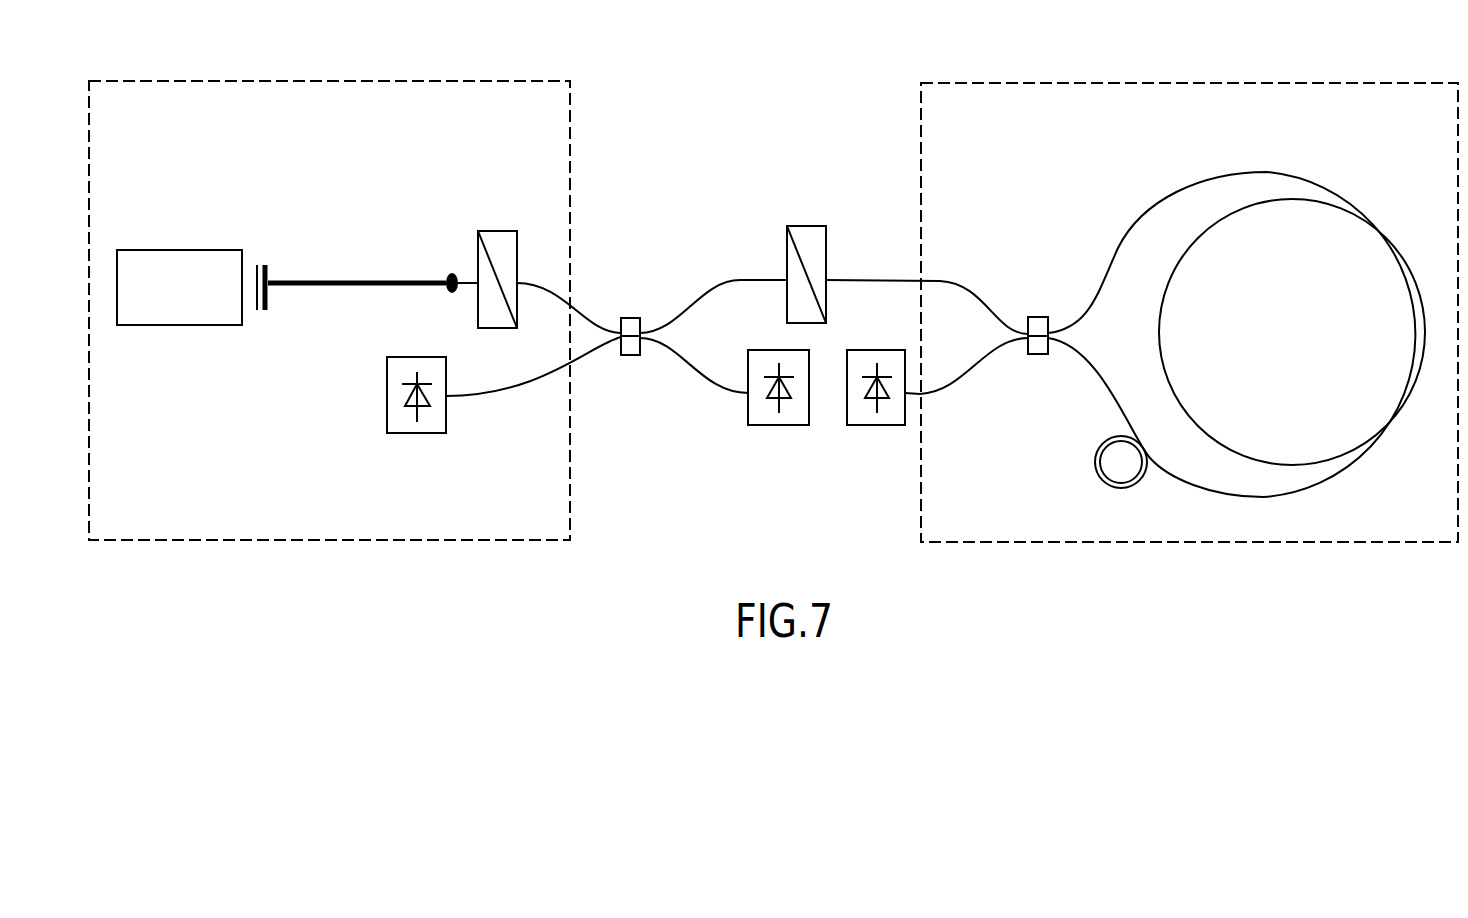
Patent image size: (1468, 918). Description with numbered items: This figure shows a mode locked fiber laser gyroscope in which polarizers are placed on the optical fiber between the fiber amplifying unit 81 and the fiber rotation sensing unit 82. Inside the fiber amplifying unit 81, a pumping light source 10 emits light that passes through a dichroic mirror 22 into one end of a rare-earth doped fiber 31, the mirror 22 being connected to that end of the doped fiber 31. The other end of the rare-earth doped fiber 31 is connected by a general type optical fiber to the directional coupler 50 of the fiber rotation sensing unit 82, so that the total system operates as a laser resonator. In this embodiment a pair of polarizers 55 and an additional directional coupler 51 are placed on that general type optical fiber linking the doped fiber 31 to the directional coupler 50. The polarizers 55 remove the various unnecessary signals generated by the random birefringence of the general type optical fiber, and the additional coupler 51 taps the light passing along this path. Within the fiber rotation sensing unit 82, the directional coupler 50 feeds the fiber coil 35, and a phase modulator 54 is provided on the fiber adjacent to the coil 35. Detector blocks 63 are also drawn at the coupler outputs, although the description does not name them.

The pumping light source 10 is at (164, 304).
The dichroic mirror 22 is at (265, 265).
The rare-earth doped fiber 31 is at (342, 279).
The fiber coil 35 is at (1316, 347).
The directional coupler 50 is at (1035, 317).
The additional directional coupler 51 is at (633, 318).
The phase modulator 54 is at (1096, 475).
The polarizer 55 is at (497, 231).
The photodetector 63 is at (405, 433).
The fiber amplifying unit 81 is at (361, 106).
The fiber rotation sensing unit 82 is at (1200, 100).